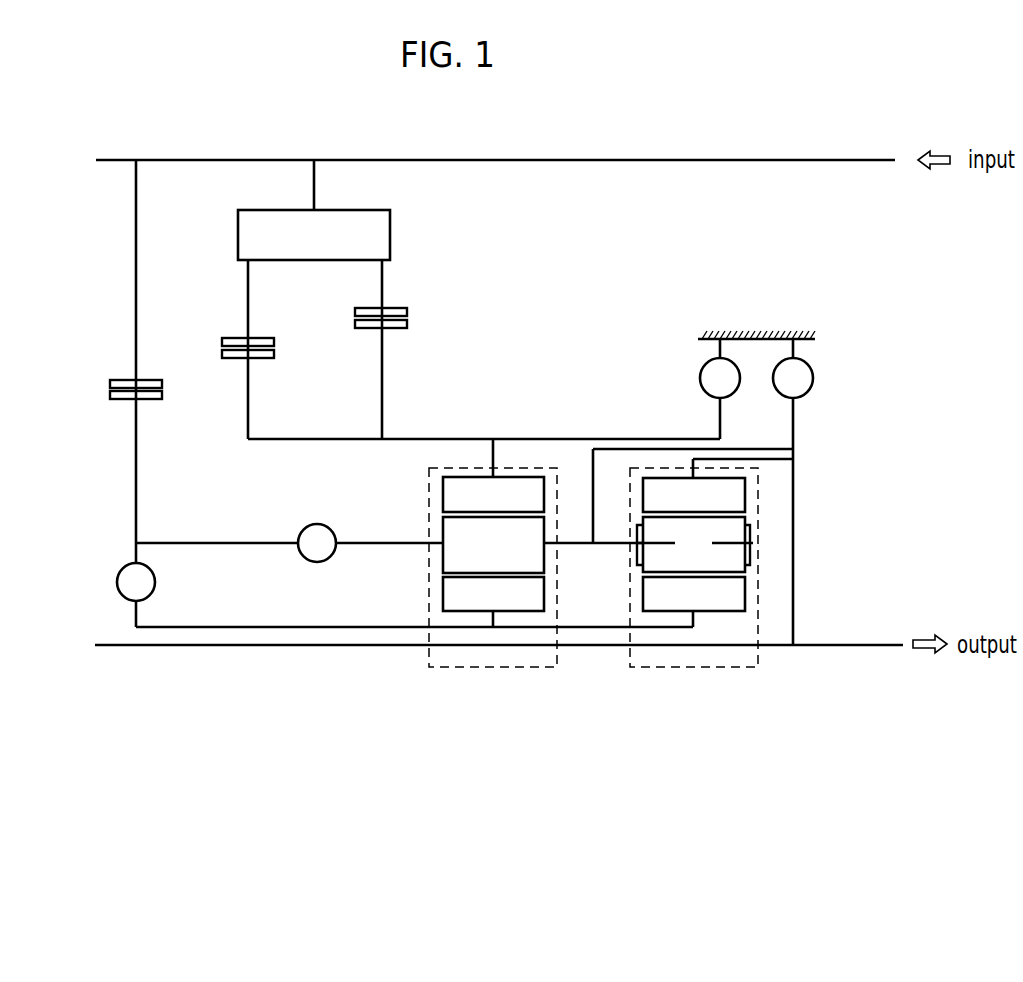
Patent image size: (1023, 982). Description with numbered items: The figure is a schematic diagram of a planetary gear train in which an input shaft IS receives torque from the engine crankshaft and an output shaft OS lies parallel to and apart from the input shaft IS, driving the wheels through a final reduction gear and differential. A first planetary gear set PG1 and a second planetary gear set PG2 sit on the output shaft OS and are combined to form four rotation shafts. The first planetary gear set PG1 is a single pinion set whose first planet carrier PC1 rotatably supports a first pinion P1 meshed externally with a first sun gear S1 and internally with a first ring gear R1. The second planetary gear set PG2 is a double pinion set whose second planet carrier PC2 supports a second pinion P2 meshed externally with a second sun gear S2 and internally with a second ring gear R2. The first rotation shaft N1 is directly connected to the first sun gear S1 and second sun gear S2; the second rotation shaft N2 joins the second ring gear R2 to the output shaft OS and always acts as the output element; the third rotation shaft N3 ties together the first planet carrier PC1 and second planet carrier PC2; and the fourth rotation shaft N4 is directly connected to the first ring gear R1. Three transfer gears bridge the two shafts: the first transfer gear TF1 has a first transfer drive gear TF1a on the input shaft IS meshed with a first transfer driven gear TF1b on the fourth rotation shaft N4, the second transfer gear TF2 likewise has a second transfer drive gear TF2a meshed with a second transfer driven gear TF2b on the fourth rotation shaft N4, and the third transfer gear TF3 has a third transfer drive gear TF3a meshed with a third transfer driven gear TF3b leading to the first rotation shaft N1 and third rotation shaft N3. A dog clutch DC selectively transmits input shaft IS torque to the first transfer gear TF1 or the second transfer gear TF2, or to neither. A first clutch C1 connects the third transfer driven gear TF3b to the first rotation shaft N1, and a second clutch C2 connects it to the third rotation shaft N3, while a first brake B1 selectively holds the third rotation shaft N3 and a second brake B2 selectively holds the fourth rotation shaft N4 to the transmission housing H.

The input shaft IS is at (575, 158).
The output shaft OS is at (833, 650).
The dog clutch DC is at (314, 235).
The first transfer gear TF1 is at (384, 302).
The first transfer drive gear TF1a is at (355, 310).
The first transfer driven gear TF1b is at (355, 326).
The second transfer gear TF2 is at (210, 329).
The second transfer drive gear TF2a is at (222, 341).
The second transfer driven gear TF2b is at (222, 355).
The third transfer gear TF3 is at (101, 369).
The third transfer drive gear TF3a is at (112, 381).
The third transfer driven gear TF3b is at (110, 397).
The first rotation shaft N1 is at (590, 635).
The second rotation shaft N2 is at (800, 574).
The third rotation shaft N3 is at (596, 440).
The fourth rotation shaft N4 is at (486, 452).
The transmission housing H is at (793, 330).
The first brake B1 is at (793, 368).
The second brake B2 is at (720, 368).
The first clutch C1 is at (136, 585).
The second clutch C2 is at (289, 543).
The first planetary gear set PG1 is at (491, 675).
The second planetary gear set PG2 is at (692, 675).
The first ring gear R1 is at (493, 494).
The first pinion P1 is at (493, 545).
The first sun gear S1 is at (493, 594).
The second ring gear R2 is at (694, 495).
The second pinion P2 is at (694, 544).
The second sun gear S2 is at (694, 594).
The first planet carrier PC1 is at (580, 548).
The second planet carrier PC2 is at (753, 545).